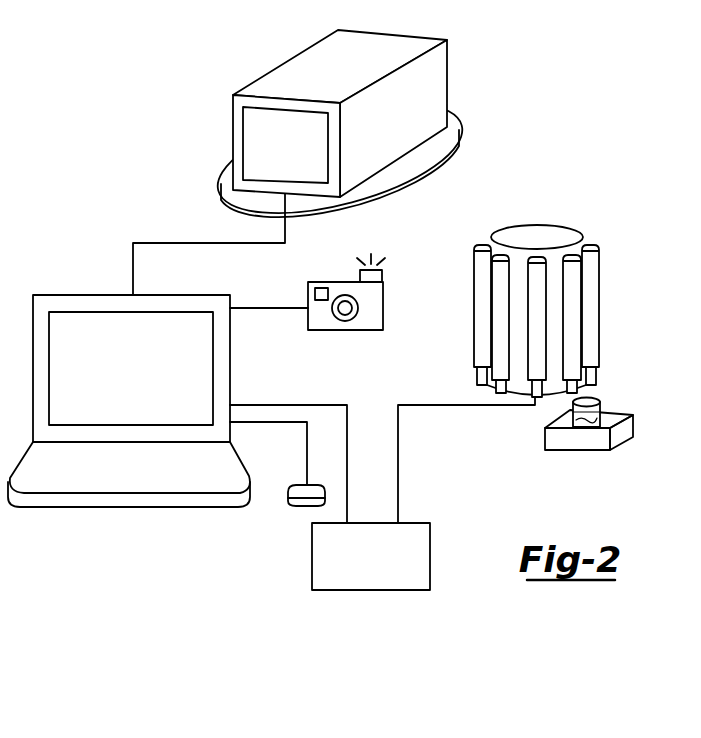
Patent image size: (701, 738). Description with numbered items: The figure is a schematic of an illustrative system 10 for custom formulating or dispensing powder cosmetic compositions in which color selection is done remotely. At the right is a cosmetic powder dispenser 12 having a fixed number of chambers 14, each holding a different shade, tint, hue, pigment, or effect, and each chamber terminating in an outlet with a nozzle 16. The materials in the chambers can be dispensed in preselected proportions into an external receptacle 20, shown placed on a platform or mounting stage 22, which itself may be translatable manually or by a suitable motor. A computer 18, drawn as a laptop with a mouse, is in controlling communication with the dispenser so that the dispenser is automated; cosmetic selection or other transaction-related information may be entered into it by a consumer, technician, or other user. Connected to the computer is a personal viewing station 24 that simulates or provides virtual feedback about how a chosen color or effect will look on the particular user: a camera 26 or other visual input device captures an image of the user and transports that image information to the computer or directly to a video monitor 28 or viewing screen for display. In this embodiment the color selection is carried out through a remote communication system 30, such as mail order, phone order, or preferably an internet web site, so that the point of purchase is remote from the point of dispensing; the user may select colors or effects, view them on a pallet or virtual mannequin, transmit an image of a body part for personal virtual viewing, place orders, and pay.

The system 10 is at (117, 532).
The cosmetic powder dispenser 12 is at (540, 275).
The chambers 14 is at (477, 253).
The nozzle 16 is at (596, 375).
The computer 18 is at (120, 379).
The receptacle 20 is at (606, 413).
The mounting stage 22 is at (622, 435).
The personal viewing station 24 is at (325, 132).
The camera 26 is at (383, 302).
The video monitor 28 is at (252, 147).
The remote communication system 30 is at (381, 566).